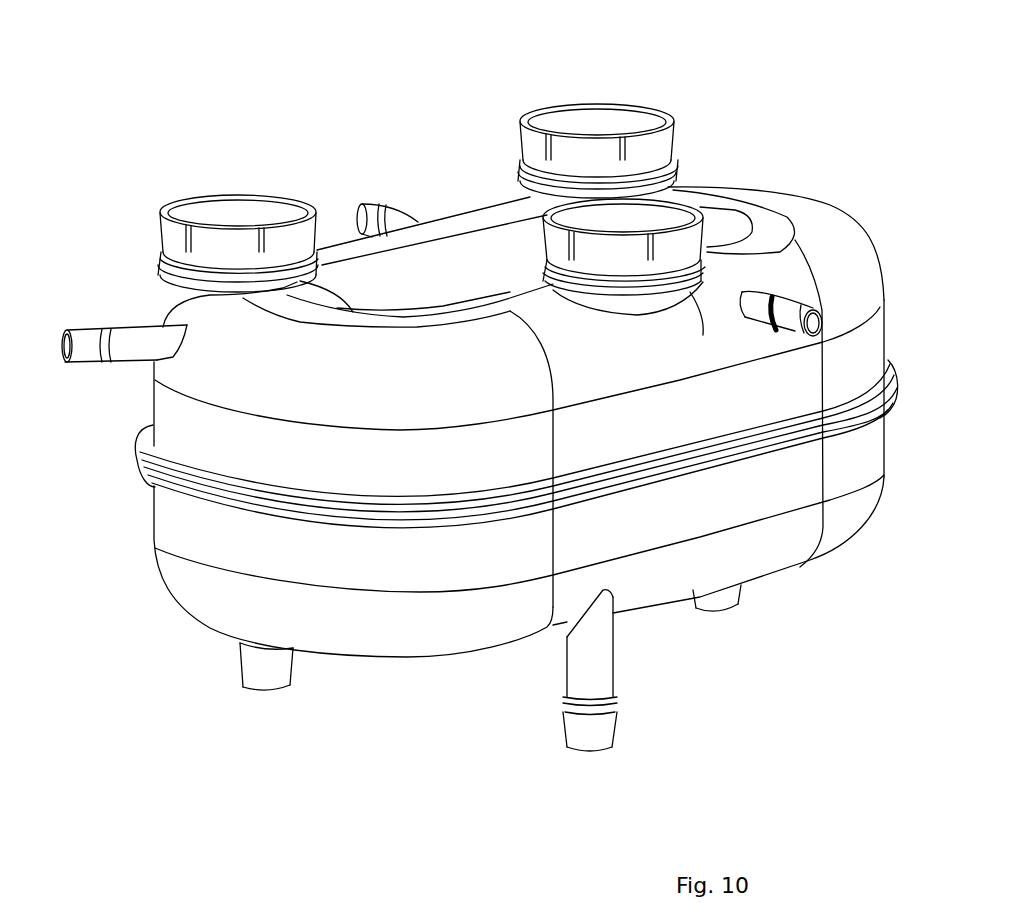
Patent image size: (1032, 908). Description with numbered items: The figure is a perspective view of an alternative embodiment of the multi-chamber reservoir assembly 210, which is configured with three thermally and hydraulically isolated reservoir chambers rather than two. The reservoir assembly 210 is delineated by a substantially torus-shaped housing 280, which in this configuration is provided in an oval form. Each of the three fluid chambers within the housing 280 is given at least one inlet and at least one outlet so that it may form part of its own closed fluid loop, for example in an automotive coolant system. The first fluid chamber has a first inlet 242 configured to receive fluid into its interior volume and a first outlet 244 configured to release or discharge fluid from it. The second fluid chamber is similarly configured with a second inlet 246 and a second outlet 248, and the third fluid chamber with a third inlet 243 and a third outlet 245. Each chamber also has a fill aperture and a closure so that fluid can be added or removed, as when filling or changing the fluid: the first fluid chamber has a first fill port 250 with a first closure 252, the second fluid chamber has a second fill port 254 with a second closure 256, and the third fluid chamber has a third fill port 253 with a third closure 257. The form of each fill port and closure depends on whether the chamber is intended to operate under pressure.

The multi-chamber reservoir assembly 210 is at (722, 102).
The first inlet 242 is at (380, 207).
The third inlet 243 is at (793, 327).
The first outlet 244 is at (733, 602).
The third outlet 245 is at (617, 697).
The second inlet 246 is at (98, 363).
The second outlet 248 is at (250, 670).
The first fill port 250 is at (680, 177).
The first closure 252 is at (586, 105).
The third fill port 253 is at (685, 300).
The second fill port 254 is at (160, 267).
The second closure 256 is at (193, 212).
The third closure 257 is at (596, 212).
The housing 280 is at (827, 204).